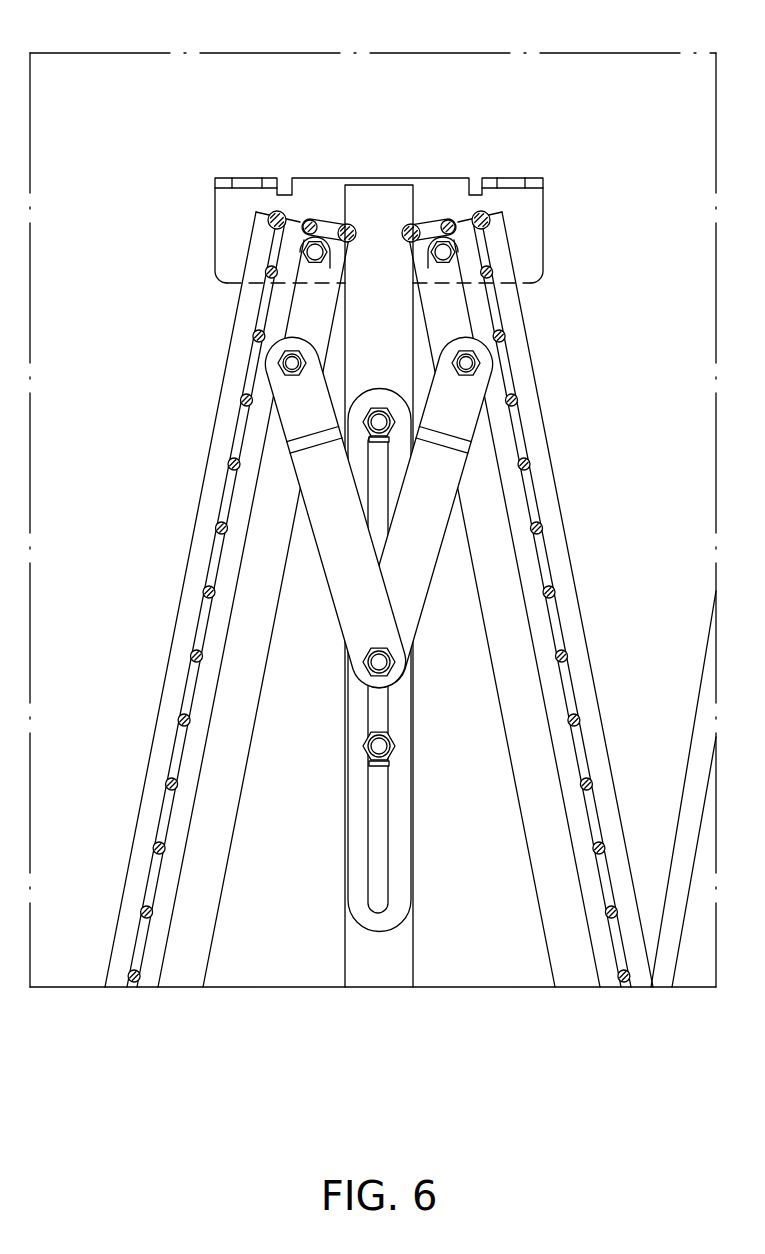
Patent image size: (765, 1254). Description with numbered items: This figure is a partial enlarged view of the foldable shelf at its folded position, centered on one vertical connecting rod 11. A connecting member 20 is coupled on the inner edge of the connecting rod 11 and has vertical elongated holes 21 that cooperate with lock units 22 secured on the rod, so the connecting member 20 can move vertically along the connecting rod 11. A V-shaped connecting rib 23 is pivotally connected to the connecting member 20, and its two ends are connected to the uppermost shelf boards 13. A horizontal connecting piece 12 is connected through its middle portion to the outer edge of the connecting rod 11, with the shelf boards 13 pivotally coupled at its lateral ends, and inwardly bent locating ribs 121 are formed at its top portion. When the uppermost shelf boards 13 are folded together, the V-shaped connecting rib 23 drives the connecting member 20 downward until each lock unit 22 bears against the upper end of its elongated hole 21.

The connecting rod 11 is at (357, 947).
The connecting piece 12 is at (443, 144).
The locating rib 121 is at (512, 182).
The shelf board 13 is at (537, 448).
The connecting member 20 is at (280, 634).
The elongated hole 21 is at (383, 807).
The lock unit 22 is at (393, 747).
The V-shaped connecting rib 23 is at (323, 498).